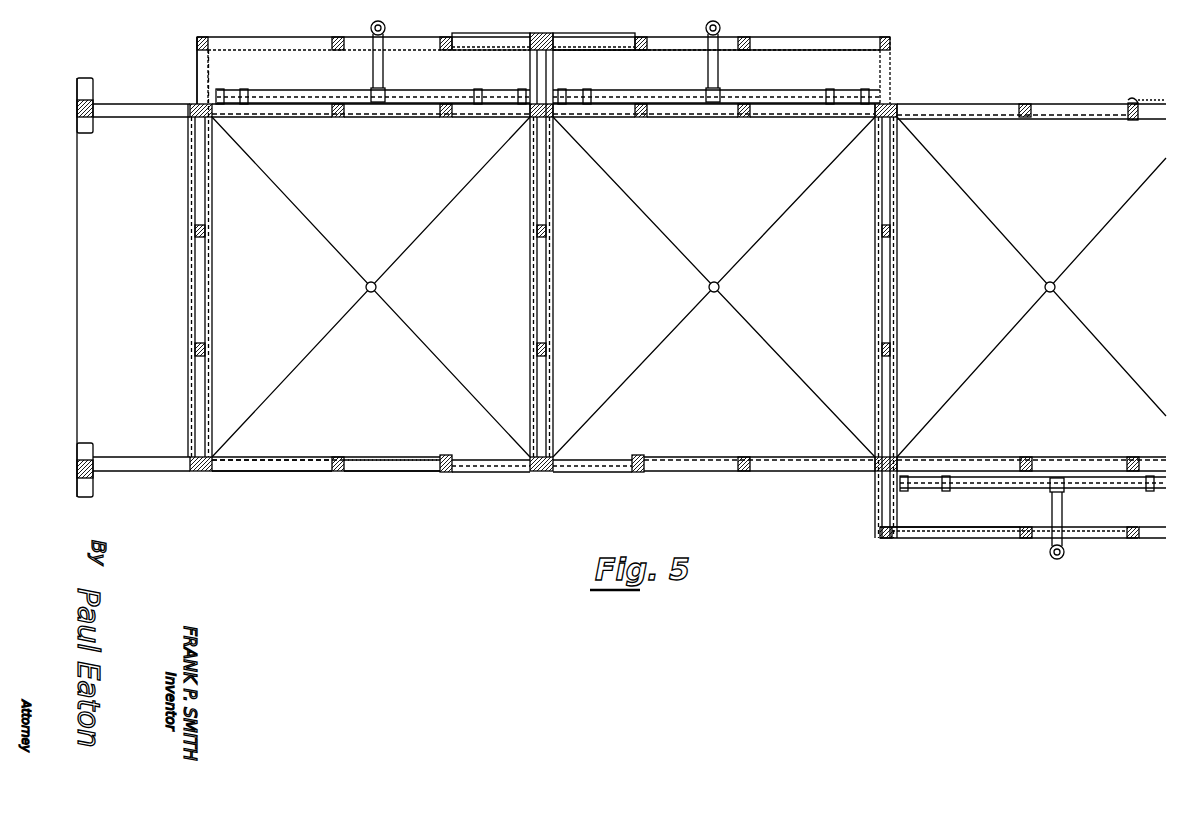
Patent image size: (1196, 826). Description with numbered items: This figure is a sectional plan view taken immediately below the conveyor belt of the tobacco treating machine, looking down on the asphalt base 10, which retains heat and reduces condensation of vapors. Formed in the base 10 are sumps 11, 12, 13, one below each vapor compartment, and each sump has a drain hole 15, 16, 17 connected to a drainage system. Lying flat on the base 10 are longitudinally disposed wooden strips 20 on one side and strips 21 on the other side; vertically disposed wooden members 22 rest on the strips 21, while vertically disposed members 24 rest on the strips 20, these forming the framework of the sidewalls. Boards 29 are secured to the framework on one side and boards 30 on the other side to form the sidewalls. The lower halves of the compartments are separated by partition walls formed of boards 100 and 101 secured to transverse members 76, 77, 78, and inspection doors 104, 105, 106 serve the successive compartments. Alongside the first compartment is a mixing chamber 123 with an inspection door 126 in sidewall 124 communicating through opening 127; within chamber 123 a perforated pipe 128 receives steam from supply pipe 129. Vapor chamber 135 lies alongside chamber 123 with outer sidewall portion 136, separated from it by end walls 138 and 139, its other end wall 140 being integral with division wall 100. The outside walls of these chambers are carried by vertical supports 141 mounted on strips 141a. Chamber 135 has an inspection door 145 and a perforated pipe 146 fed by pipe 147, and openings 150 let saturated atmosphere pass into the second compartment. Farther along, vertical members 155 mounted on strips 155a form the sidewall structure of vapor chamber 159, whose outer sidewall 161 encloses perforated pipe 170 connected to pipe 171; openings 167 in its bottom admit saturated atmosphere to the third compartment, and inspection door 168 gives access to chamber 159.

The base 10 is at (76, 296).
The sump 11 is at (371, 287).
The sump 12 is at (714, 287).
The sump 13 is at (1031, 287).
The drain hole 15 is at (376, 287).
The drain hole 16 is at (719, 287).
The drain hole 17 is at (1055, 288).
The longitudinally disposed strips 20 is at (402, 478).
The longitudinally disposed strips 21 is at (160, 118).
The vertically disposed wooden members 22 is at (93, 105).
The vertically disposed members 24 is at (90, 476).
The boards 29 is at (378, 448).
The boards 30 is at (990, 122).
The transverse member 76 is at (200, 306).
The transverse member 77 is at (540, 326).
The transverse member 78 is at (882, 316).
The boards 100 is at (188, 276).
The boards 101 is at (216, 272).
The inspection door 104 is at (474, 478).
The inspection door 105 is at (574, 476).
The inspection door 106 is at (1170, 86).
The mixing chamber 123 is at (371, 81).
The sidewall 124 is at (332, 52).
The inspection door 126 is at (506, 32).
The opening 127 is at (304, 120).
The perforated pipe 128 is at (316, 96).
The steam supply pipe 129 is at (384, 80).
The vapor chamber 135 is at (716, 83).
The outer sidewall portion 136 is at (688, 52).
The end wall 138 is at (530, 78).
The end wall 139 is at (556, 78).
The end wall 140 is at (880, 78).
The vertically disposed supports 141 is at (203, 38).
The strips 141a is at (240, 38).
The inspection door 145 is at (618, 32).
The perforated pipe 146 is at (774, 82).
The pipe 147 is at (718, 84).
The openings 150 is at (610, 118).
The vertical members 155 is at (880, 532).
The strips 155a is at (912, 540).
The vapor chamber 159 is at (1027, 496).
The outer sidewall 161 is at (975, 514).
The openings 167 is at (980, 452).
The inspection door 168 is at (1140, 540).
The perforated pipe 170 is at (988, 490).
The pipe 171 is at (1066, 508).